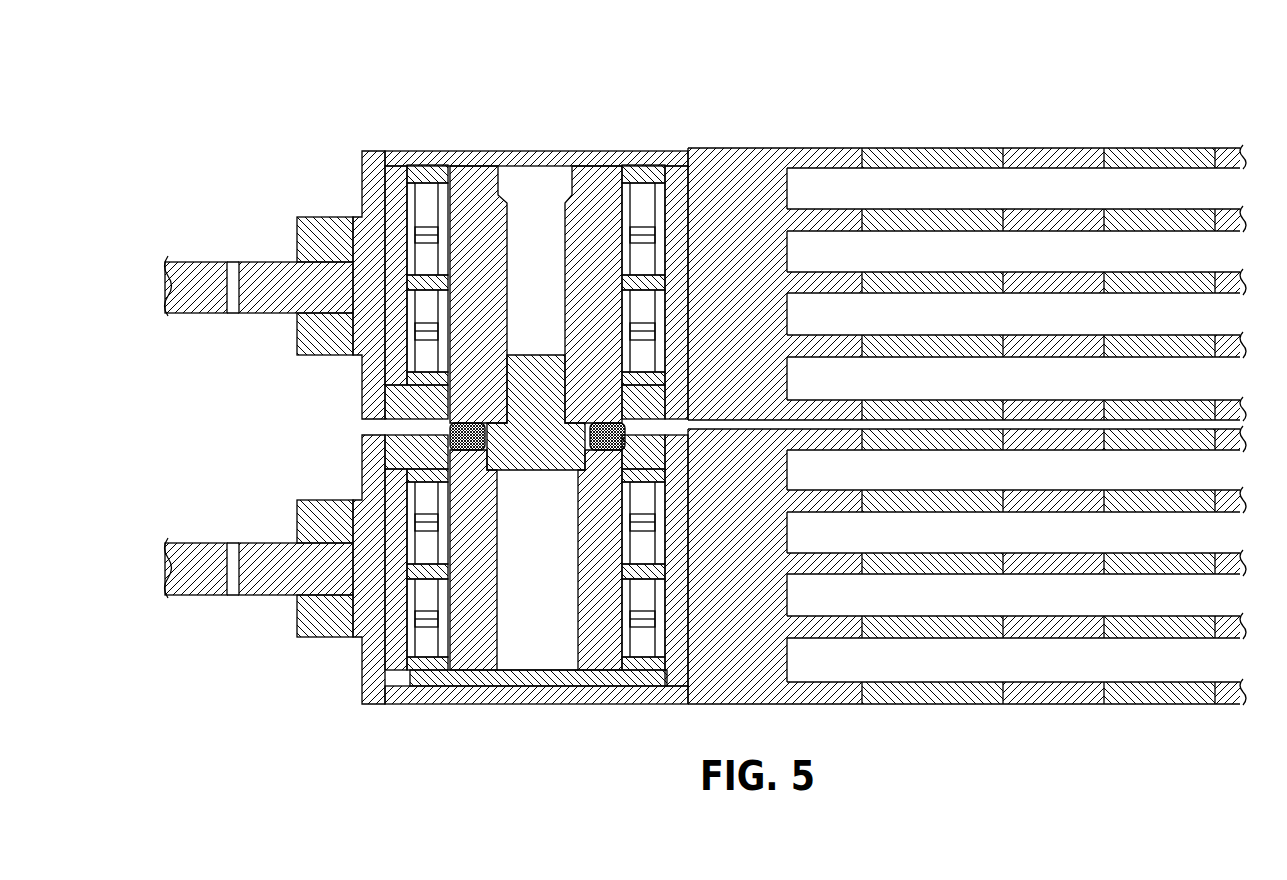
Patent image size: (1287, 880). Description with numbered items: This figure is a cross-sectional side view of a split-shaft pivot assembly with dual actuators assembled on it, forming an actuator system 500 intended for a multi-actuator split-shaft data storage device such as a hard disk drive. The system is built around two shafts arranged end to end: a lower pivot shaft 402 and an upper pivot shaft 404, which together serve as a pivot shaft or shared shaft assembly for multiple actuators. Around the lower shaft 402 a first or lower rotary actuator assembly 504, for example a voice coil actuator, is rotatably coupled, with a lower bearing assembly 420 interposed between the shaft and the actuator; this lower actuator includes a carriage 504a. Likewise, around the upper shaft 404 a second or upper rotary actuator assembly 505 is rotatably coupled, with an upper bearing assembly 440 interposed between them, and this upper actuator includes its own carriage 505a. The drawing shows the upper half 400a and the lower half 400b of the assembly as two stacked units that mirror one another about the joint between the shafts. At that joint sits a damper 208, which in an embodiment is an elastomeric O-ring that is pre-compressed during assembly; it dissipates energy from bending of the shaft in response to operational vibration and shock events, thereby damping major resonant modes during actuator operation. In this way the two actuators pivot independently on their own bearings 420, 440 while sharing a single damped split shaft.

The actuator system 500 is at (528, 78).
The first connector half 400a is at (347, 194).
The second connector half 400b is at (347, 662).
The upper pivot shaft 404 is at (557, 243).
The lower pivot shaft 402 is at (557, 526).
The upper bearing assembly 440 is at (647, 195).
The lower bearing assembly 420 is at (632, 685).
The damper 208 is at (688, 428).
The upper rotary actuator assembly 505 is at (268, 250).
The lower rotary actuator assembly 504 is at (283, 578).
The carriage 505a is at (745, 160).
The carriage 504a is at (748, 694).